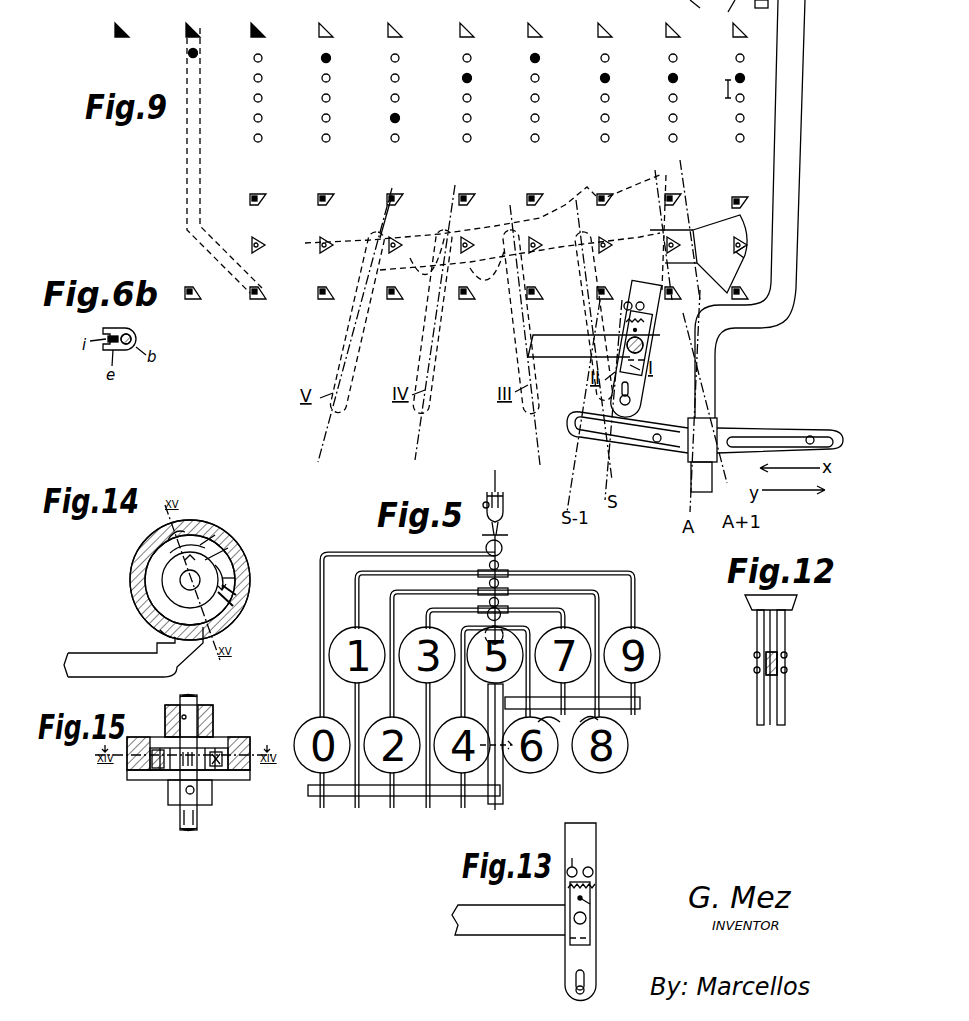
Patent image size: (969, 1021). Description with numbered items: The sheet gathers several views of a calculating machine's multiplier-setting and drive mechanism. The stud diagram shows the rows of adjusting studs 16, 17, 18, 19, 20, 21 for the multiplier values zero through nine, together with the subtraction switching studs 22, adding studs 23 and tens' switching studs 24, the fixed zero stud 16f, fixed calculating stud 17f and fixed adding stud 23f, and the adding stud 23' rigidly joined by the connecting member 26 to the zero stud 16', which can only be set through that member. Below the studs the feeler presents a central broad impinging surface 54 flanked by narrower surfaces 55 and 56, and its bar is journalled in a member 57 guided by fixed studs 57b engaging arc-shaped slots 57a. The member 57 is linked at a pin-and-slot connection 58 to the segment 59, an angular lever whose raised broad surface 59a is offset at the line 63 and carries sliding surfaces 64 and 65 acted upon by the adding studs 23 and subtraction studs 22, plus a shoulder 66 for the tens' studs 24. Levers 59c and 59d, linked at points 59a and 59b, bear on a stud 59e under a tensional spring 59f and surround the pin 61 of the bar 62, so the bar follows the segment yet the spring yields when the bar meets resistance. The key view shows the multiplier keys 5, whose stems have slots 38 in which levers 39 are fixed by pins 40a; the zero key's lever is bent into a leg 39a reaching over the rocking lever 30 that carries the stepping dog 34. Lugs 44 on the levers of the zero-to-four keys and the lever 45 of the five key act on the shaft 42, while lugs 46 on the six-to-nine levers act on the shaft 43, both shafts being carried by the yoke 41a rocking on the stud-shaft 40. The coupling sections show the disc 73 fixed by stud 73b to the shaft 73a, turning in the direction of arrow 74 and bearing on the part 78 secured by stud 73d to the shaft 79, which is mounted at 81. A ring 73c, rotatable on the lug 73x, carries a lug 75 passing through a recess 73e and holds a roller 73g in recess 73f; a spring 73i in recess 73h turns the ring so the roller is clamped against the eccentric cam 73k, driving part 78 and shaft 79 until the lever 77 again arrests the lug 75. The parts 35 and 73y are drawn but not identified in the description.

In FIG. 5, the multiplier keys 5 is at (540, 765).
In FIG. 12, the multiplier keys 5 is at (793, 603).
In FIG. 9, the zero studs 16 is at (753, 37).
In FIG. 5, the zero studs 16 is at (509, 544).
In FIG. 9, the calculating studs 17 is at (744, 58).
In FIG. 5, the calculating studs 17 is at (500, 566).
In FIG. 9, the studs 18 is at (744, 78).
In FIG. 5, the studs 18 is at (500, 584).
In FIG. 9, the studs 19 is at (744, 98).
In FIG. 5, the studs 19 is at (500, 602).
In FIG. 9, the studs 20 is at (744, 118).
In FIG. 5, the studs 20 is at (501, 616).
In FIG. 9, the studs 21 is at (744, 138).
In FIG. 5, the studs 21 is at (500, 668).
In FIG. 9, the subtraction-switching stud 22 is at (746, 205).
In FIG. 9, the adding stud 23 is at (751, 287).
In FIG. 9, the tens' switching stud 24 is at (677, 230).
In FIG. 9, the connecting member 26 is at (192, 138).
In FIG. 5, the rocking lever 30 is at (505, 510).
In FIG. 5, the stepping dog 34 is at (485, 496).
In FIG. 5, the rod 35 is at (495, 473).
In FIG. 12, the slot 38 is at (771, 730).
In FIG. 5, the levers 39 is at (425, 702).
In FIG. 12, the levers 39 is at (776, 672).
In FIG. 5, the leg 39a is at (352, 552).
In FIG. 5, the stud-shaft 40 is at (510, 752).
In FIG. 12, the pins 40a is at (788, 655).
In FIG. 5, the yoke 41a is at (505, 790).
In FIG. 5, the shaft 42 is at (318, 800).
In FIG. 5, the shaft 43 is at (637, 705).
In FIG. 5, the lugs 44 is at (355, 810).
In FIG. 5, the lever 45 is at (495, 817).
In FIG. 5, the lugs 46 is at (568, 725).
In FIG. 9, the central impinging surface 54 is at (723, 12).
In FIG. 9, the impinging surface 55 is at (760, 8).
In FIG. 9, the impinging surface 56 is at (688, 6).
In FIG. 9, the member 57 is at (752, 432).
In FIG. 9, the slots 57a is at (632, 449).
In FIG. 9, the fixed studs 57b is at (810, 436).
In FIG. 9, the pin-and-slot connection 58 is at (631, 400).
In FIG. 13, the pin-and-slot connection 58 is at (585, 985).
In FIG. 13, the segment 59 is at (598, 845).
In FIG. 9, the broad surface 59a is at (635, 300).
In FIG. 13, the broad surface 59a is at (580, 855).
In FIG. 9, the linking point 59b is at (644, 306).
In FIG. 13, the linking point 59b is at (593, 872).
In FIG. 9, the lever 59c is at (626, 322).
In FIG. 13, the lever 59c is at (570, 940).
In FIG. 9, the lever 59d is at (637, 330).
In FIG. 13, the lever 59d is at (590, 938).
In FIG. 9, the stud 59e is at (644, 340).
In FIG. 13, the stud 59e is at (590, 904).
In FIG. 9, the tensional spring 59f is at (625, 308).
In FIG. 13, the tensional spring 59f is at (594, 892).
In FIG. 9, the pin 61 is at (643, 348).
In FIG. 9, the bar 62 is at (558, 358).
In FIG. 13, the bar 62 is at (492, 925).
In FIG. 9, the offset line 63 is at (712, 228).
In FIG. 9, the sliding surface 64 is at (712, 278).
In FIG. 9, the sliding surface 65 is at (720, 245).
In FIG. 9, the shoulder 66 is at (745, 252).
In FIG. 15, the disc 73 is at (135, 775).
In FIG. 15, the shaft 73a is at (186, 822).
In FIG. 15, the stud 73b is at (186, 795).
In FIG. 14, the ring 73c is at (155, 562).
In FIG. 15, the ring 73c is at (158, 775).
In FIG. 15, the stud 73d is at (200, 712).
In FIG. 14, the recess 73e is at (165, 634).
In FIG. 14, the recess 73f is at (200, 548).
In FIG. 14, the roller 73g is at (180, 536).
In FIG. 15, the roller 73g is at (245, 770).
In FIG. 14, the recess 73h is at (222, 565).
In FIG. 14, the spring 73i is at (238, 592).
In FIG. 14, the eccentric cam 73k is at (222, 525).
In FIG. 14, the lug 73x is at (225, 545).
In FIG. 15, the lug 73x is at (215, 775).
In FIG. 14, the gear part 73y is at (240, 578).
In FIG. 14, the arrow 74 is at (172, 582).
In FIG. 14, the lug 75 is at (185, 652).
In FIG. 14, the lever 77 is at (88, 662).
In FIG. 14, the part 78 is at (240, 606).
In FIG. 15, the part 78 is at (213, 742).
In FIG. 15, the shaft 79 is at (180, 700).
In FIG. 13, the bearing point 81 is at (586, 918).
In FIG. 9, the fixed zero stud 16f is at (124, 40).
In FIG. 9, the zero stud 16' is at (208, 20).
In FIG. 9, the fixed calculating stud 17f is at (198, 52).
In FIG. 9, the fixed adding stud 23f is at (193, 300).
In FIG. 9, the adding stud 23' is at (259, 307).